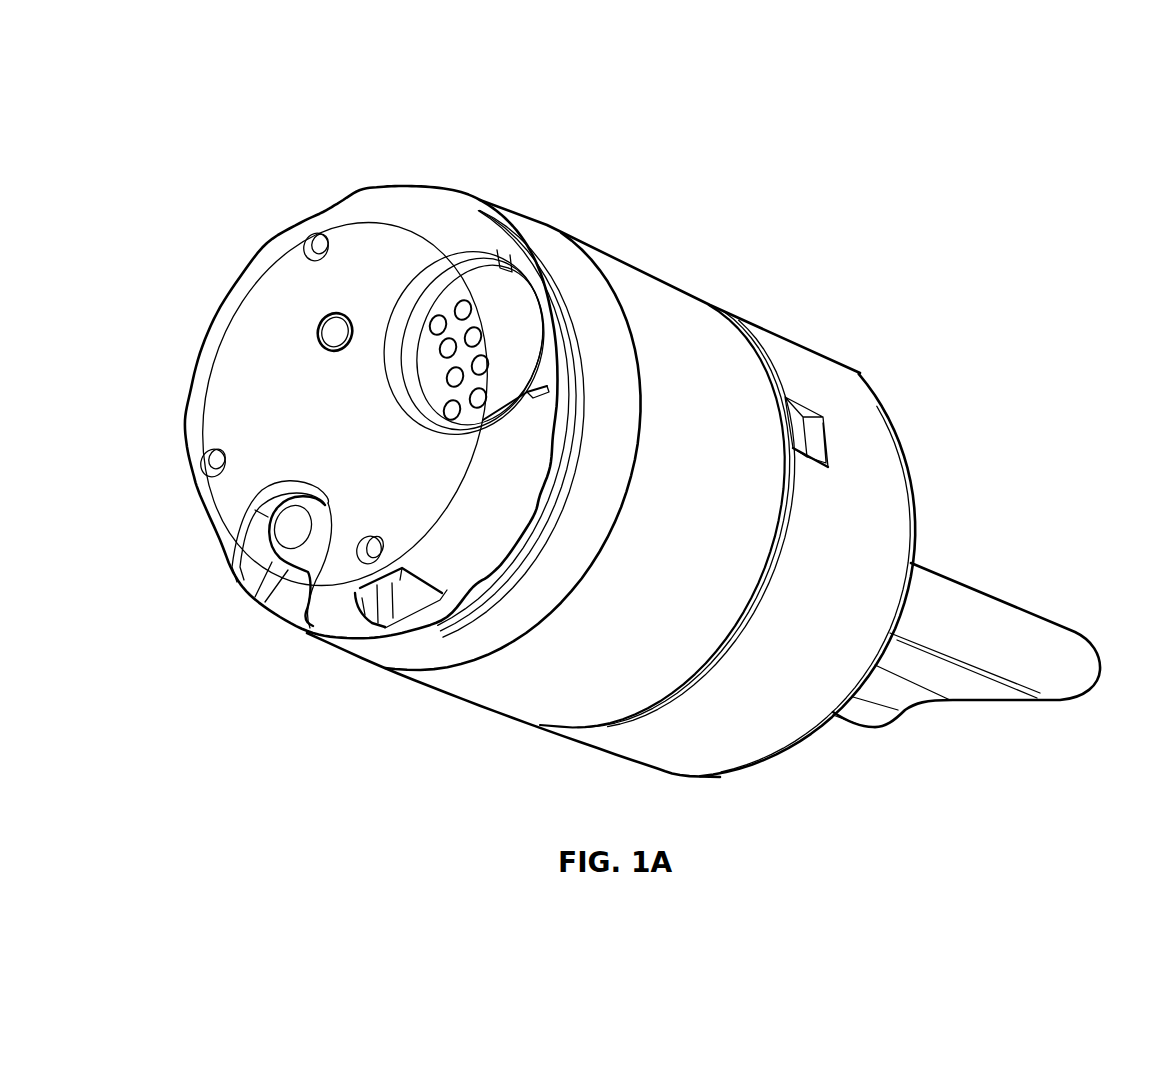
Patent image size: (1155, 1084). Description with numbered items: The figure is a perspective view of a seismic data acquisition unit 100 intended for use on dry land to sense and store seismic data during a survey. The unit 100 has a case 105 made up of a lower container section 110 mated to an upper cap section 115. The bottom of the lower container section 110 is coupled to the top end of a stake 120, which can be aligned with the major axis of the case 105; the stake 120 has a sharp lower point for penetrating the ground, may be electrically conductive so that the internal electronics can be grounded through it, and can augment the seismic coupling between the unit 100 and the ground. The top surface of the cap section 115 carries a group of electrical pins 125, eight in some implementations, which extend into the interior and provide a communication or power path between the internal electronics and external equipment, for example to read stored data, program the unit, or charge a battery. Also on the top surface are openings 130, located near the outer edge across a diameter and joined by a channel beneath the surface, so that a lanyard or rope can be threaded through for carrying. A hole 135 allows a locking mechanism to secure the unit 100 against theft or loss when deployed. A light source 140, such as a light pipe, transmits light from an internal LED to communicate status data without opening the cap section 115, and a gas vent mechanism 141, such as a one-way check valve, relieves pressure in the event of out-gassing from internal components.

The seismic data acquisition unit 100 is at (666, 52).
The case 105 is at (666, 795).
The lower container section 110 is at (737, 375).
The upper cap section 115 is at (555, 245).
The stake 120 is at (977, 625).
The electrical pins 125 is at (492, 340).
The openings 130 is at (313, 237).
The hole 135 is at (208, 452).
The light source 140 is at (324, 338).
The gas vent mechanism 141 is at (292, 532).